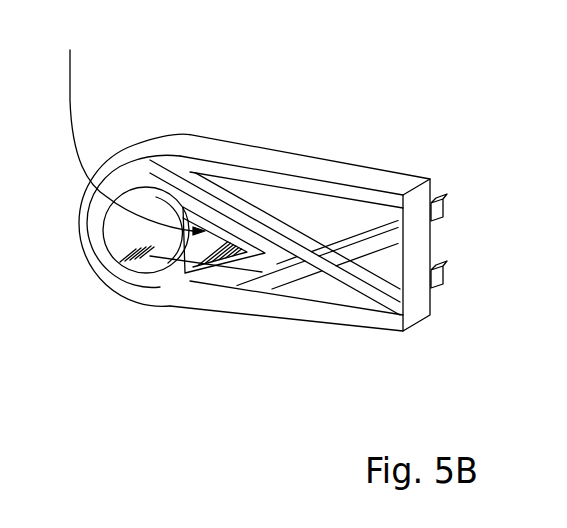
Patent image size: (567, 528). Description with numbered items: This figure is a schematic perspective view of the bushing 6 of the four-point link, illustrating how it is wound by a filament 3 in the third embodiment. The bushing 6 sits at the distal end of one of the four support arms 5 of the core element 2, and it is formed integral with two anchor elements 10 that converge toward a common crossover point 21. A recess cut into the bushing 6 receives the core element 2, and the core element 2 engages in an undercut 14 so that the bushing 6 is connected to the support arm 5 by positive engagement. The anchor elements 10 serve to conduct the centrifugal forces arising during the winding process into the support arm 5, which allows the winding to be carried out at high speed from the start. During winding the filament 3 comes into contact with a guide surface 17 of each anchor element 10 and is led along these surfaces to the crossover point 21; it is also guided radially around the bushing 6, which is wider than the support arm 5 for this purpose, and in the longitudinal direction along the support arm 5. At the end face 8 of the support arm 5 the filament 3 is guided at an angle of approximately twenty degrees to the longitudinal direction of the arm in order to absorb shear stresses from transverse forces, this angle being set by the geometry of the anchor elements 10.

The core element 2 is at (313, 288).
The filament 3 is at (383, 201).
The support arm 5 is at (314, 134).
The bushing 6 is at (133, 122).
The end face 8 is at (334, 214).
The anchor element 10 is at (220, 212).
The undercut 14 is at (81, 203).
The guide surface 17 is at (245, 226).
The crossover point 21 is at (303, 272).